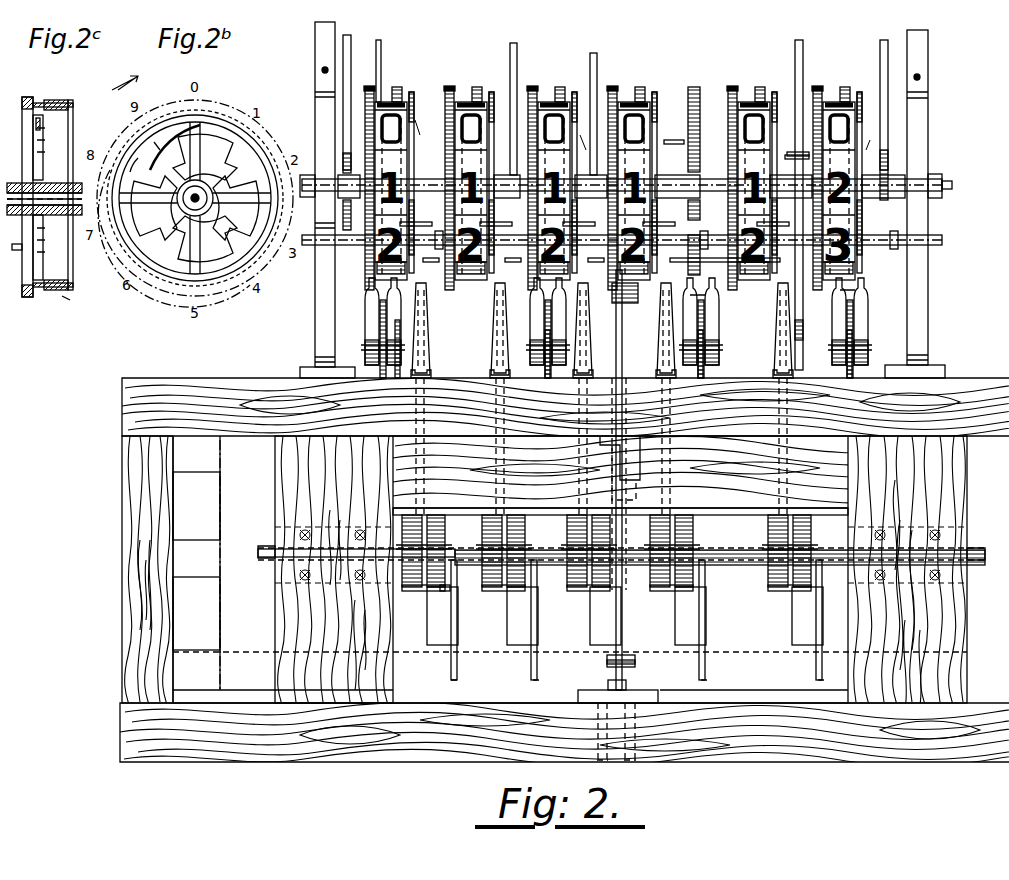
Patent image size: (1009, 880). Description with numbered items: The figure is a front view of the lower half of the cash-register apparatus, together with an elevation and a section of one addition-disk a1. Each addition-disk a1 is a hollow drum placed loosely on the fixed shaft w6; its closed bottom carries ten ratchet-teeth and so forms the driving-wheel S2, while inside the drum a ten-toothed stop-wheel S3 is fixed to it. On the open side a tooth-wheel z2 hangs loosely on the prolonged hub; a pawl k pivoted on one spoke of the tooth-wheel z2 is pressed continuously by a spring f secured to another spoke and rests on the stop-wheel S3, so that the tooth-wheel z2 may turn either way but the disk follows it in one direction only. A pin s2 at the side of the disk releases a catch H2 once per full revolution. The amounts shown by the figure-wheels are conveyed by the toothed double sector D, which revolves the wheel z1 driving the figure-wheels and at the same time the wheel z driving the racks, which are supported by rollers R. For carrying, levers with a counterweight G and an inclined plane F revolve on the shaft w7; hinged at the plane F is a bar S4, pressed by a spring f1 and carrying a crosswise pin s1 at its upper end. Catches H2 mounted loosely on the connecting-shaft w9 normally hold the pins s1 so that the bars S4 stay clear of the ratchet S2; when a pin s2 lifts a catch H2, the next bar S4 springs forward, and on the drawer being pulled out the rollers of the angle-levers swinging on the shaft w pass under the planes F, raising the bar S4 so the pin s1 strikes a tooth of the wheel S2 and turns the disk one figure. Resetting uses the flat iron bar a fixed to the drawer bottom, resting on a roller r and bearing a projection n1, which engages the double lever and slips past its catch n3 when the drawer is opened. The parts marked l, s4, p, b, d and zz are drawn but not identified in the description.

In FIG. 2, the tooth-wheel z2 is at (369, 87).
In FIG. 2B, the tooth-wheel z2 is at (262, 130).
In FIG. 2C, the tooth-wheel z2 is at (19, 206).
In FIG. 2, the toothed wheel z1 is at (400, 87).
In FIG. 2, the toothed wheel z is at (711, 293).
In FIG. 2, the lever rod l is at (380, 88).
In FIG. 2, the addition-disk a1 is at (470, 103).
In FIG. 2C, the addition-disk a1 is at (48, 104).
In FIG. 2, the driving-wheel S2 is at (645, 128).
In FIG. 2B, the driving-wheel S2 is at (116, 278).
In FIG. 2C, the driving-wheel S2 is at (47, 276).
In FIG. 2B, the stop-wheel S3 is at (195, 198).
In FIG. 2C, the stop-wheel S3 is at (41, 160).
In FIG. 2, the bar S4 is at (418, 470).
In FIG. 2, the toothed double sector D is at (880, 60).
In FIG. 2, the fixed shaft w6 is at (515, 178).
In FIG. 2B, the fixed shaft w6 is at (208, 196).
In FIG. 2C, the fixed shaft w6 is at (44, 199).
In FIG. 2, the connecting-shaft w9 is at (358, 242).
In FIG. 2, the shaft w7 is at (458, 550).
In FIG. 2, the shaft w is at (588, 592).
In FIG. 2, the pin s1 is at (594, 216).
In FIG. 2, the pin s2 is at (616, 206).
In FIG. 2, the pawl s4 is at (692, 305).
In FIG. 2, the spring f1 is at (425, 345).
In FIG. 2B, the spring f is at (136, 170).
In FIG. 2B, the pawl k is at (165, 148).
In FIG. 2C, the pawl k is at (43, 137).
In FIG. 2, the roller R is at (385, 365).
In FIG. 2, the rod p is at (629, 349).
In FIG. 2, the central rod b is at (616, 340).
In FIG. 2, the guide d is at (612, 480).
In FIG. 2, the counterweight G is at (528, 545).
In FIG. 2, the plane F is at (448, 640).
In FIG. 2, the rod zz is at (456, 645).
In FIG. 2, the catch H2 is at (734, 171).
In FIG. 2, the catch n3 is at (607, 658).
In FIG. 2, the projection n1 is at (608, 686).
In FIG. 2, the flat iron bar a is at (640, 692).
In FIG. 2, the roller r is at (630, 755).